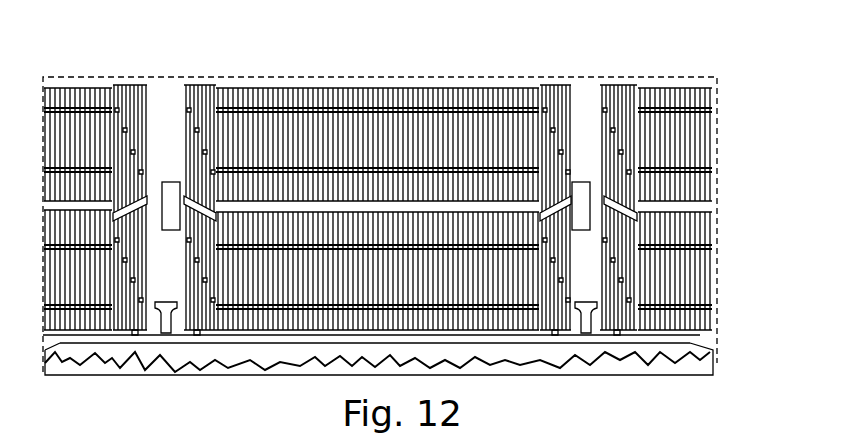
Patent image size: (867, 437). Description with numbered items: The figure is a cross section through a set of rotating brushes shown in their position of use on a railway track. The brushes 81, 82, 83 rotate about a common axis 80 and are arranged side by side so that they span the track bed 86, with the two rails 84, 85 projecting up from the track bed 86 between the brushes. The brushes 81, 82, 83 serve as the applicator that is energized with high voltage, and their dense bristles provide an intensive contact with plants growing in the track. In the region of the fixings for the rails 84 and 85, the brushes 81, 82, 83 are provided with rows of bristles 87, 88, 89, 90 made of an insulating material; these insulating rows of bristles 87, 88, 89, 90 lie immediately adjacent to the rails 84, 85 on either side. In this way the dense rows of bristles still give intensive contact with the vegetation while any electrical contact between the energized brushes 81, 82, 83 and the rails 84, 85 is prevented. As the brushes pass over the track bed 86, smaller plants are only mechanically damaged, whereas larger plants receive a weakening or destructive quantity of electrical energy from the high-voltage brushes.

The axis 80 is at (578, 182).
The brush 81 is at (86, 87).
The brush 82 is at (347, 88).
The brush 83 is at (695, 88).
The rail 84 is at (167, 334).
The rail 85 is at (586, 334).
The track bed 86 is at (717, 363).
The row of bristles 87 is at (140, 86).
The row of bristles 88 is at (188, 86).
The row of bristles 89 is at (555, 86).
The row of bristles 90 is at (608, 86).